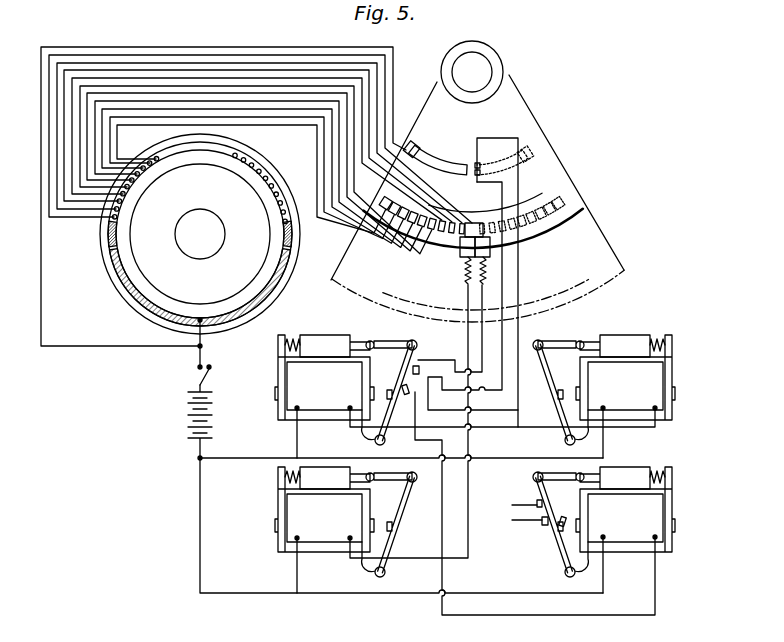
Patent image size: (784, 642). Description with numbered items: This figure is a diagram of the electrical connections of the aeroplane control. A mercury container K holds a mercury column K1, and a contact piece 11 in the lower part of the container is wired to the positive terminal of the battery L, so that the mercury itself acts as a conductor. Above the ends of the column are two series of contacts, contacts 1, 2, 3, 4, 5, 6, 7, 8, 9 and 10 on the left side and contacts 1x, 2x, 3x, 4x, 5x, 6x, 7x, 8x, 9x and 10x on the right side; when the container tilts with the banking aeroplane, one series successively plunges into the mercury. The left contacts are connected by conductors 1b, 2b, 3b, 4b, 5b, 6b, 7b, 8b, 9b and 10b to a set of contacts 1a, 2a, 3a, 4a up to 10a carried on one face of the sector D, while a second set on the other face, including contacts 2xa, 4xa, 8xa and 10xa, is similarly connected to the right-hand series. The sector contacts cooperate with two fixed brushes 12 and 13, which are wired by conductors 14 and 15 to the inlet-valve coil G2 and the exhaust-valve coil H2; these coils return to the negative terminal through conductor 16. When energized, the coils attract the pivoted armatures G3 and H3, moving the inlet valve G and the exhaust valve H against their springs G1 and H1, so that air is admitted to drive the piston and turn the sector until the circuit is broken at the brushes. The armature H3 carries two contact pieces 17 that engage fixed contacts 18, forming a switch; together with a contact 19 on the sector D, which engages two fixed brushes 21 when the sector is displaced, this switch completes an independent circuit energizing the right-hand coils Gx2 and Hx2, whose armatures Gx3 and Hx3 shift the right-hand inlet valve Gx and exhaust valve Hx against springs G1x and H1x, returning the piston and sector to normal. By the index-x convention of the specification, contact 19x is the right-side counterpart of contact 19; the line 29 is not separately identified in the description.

The return conductor 29 is at (92, 47).
The conductor 1b is at (115, 55).
The conductor 2b is at (138, 63).
The conductor 3b is at (158, 72).
The conductor 4b is at (178, 80).
The conductor 5b is at (197, 85).
The conductor 6b is at (215, 93).
The conductor 7b is at (230, 102).
The conductor 8b is at (250, 109).
The conductor 9b is at (275, 117).
The conductor 10b is at (300, 125).
The fixed brushes 21 is at (486, 72).
The sector D is at (604, 240).
The contact 19 is at (431, 158).
The right-side contact 19x is at (531, 152).
The sector contact 1a is at (475, 222).
The sector contact 2a is at (462, 236).
The sector contact 3a is at (452, 236).
The sector contact 4a is at (442, 234).
The sector contact 10a is at (382, 200).
The sector contact 2xa is at (527, 240).
The sector contact 4xa is at (560, 238).
The sector contact 8xa is at (558, 216).
The sector contact 10xa is at (566, 195).
The brush 12 is at (486, 250).
The brush 13 is at (472, 250).
The contact piece 11 is at (195, 326).
The mercury container K is at (132, 273).
The mercury column K1 is at (140, 290).
The contact 1 is at (112, 218).
The contact 2 is at (114, 210).
The contact 3 is at (117, 203).
The contact 4 is at (125, 196).
The contact 5 is at (129, 189).
The contact 6 is at (134, 182).
The contact 7 is at (139, 176).
The contact 8 is at (145, 170).
The contact 9 is at (152, 165).
The contact 10 is at (159, 160).
The contact 1x is at (283, 224).
The contact 2x is at (281, 214).
The contact 3x is at (278, 205).
The contact 4x is at (274, 196).
The contact 5x is at (269, 188).
The contact 6x is at (268, 179).
The contact 7x is at (261, 172).
The contact 8x is at (250, 167).
The contact 9x is at (242, 162).
The contact 10x is at (234, 158).
The battery L is at (194, 418).
The conductor 16 is at (200, 452).
The conductor 14 is at (470, 483).
The conductor 15 is at (484, 416).
The contact pieces 17 is at (409, 368).
The contacts 18 is at (420, 366).
The exhaust valve H is at (364, 343).
The spring H1 is at (289, 338).
The exhaust valve coil H2 is at (324, 377).
The armature H3 is at (402, 345).
The inlet valve G is at (358, 472).
The spring G1 is at (283, 476).
The inlet valve coil G2 is at (324, 509).
The armature G3 is at (402, 500).
The inlet valve Gx is at (588, 342).
The spring G1x is at (660, 338).
The inlet valve coil Gx2 is at (625, 377).
The armature Gx3 is at (548, 360).
The exhaust valve Hx is at (596, 474).
The spring H1x is at (660, 470).
The exhaust valve coil Hx2 is at (625, 509).
The armature Hx3 is at (560, 532).